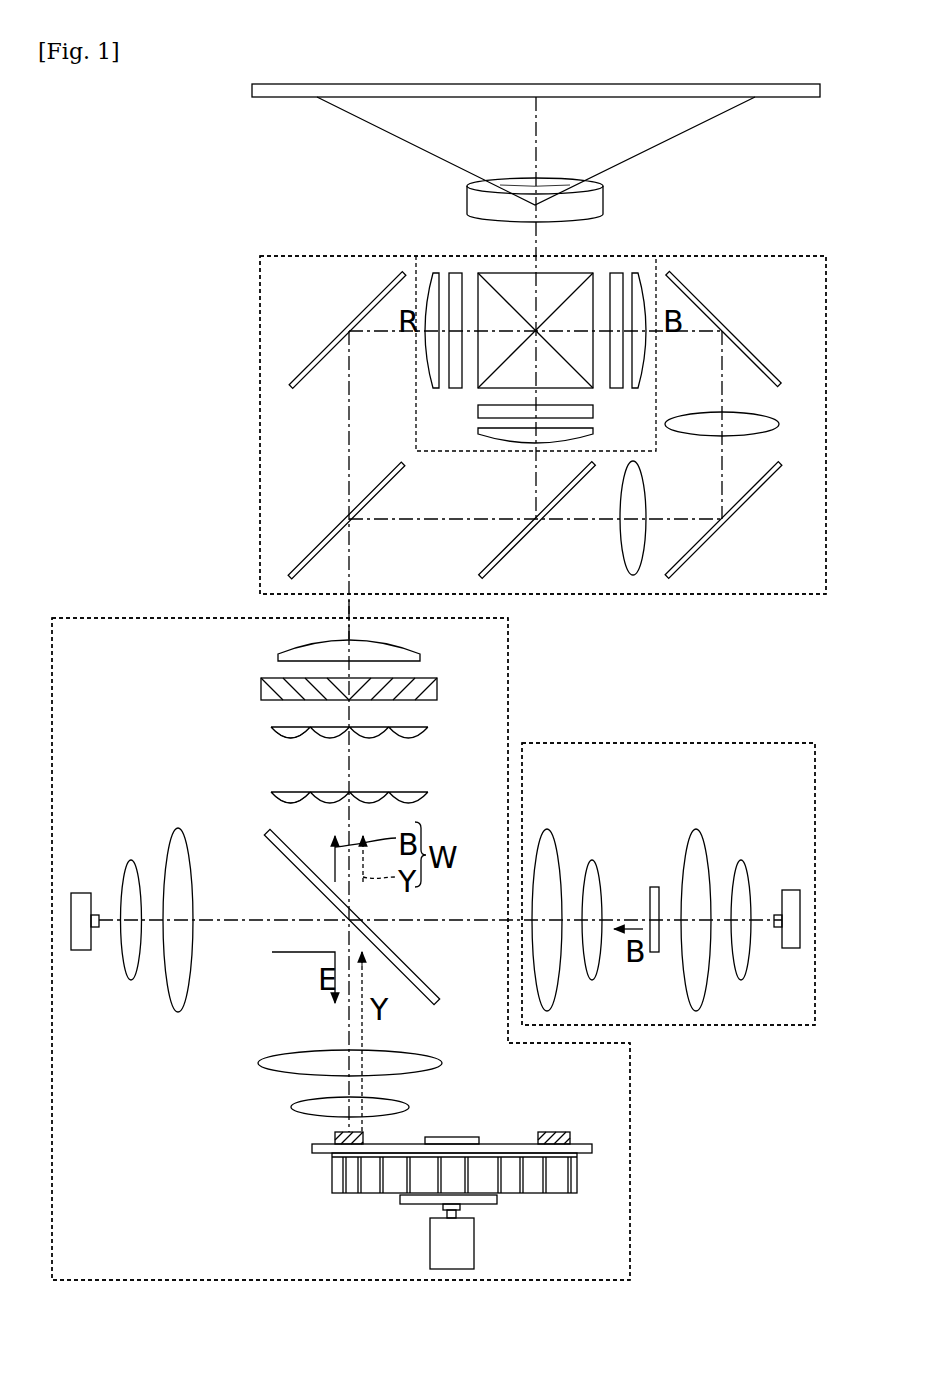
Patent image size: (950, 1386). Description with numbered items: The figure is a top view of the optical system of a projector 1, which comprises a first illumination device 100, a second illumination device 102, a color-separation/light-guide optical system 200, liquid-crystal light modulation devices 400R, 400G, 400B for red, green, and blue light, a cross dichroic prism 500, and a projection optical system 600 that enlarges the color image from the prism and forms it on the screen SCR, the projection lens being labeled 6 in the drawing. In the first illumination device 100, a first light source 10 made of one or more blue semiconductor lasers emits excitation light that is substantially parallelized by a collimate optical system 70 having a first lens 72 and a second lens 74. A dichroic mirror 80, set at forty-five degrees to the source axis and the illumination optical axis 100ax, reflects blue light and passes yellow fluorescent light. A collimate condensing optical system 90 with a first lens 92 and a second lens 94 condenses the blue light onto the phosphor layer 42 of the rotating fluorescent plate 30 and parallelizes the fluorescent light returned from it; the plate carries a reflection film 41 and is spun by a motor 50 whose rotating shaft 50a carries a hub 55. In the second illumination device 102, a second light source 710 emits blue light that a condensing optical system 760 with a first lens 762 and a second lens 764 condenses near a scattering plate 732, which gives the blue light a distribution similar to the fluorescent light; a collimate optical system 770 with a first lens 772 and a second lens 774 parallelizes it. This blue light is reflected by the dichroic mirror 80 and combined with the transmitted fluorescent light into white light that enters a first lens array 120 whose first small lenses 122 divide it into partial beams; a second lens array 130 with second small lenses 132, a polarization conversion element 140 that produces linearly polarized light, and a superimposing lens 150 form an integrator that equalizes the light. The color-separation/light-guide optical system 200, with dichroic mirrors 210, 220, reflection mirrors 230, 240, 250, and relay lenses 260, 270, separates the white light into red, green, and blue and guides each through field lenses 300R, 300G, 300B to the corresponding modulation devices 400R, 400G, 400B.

The projector 1 is at (216, 178).
The screen SCR is at (790, 98).
The projection optical system 6 is at (520, 186).
The projection optical system 600 is at (467, 203).
The cross dichroic prism 500 is at (585, 272).
The liquid-crystal light modulation device 400R is at (450, 272).
The liquid-crystal light modulation device 400G is at (478, 411).
The liquid-crystal light modulation device 400B is at (615, 272).
The field lens 300R is at (432, 272).
The field lens 300G is at (478, 435).
The field lens 300B is at (637, 272).
The color-separation/light-guide optical system 200 is at (770, 594).
The dichroic mirror 210 is at (317, 545).
The dichroic mirror 220 is at (525, 548).
The reflection mirror 230 is at (295, 378).
The reflection mirror 240 is at (745, 505).
The reflection mirror 250 is at (779, 375).
The relay lens 260 is at (620, 537).
The relay lens 270 is at (745, 412).
The first illumination device 100 is at (630, 1202).
The illumination optical axis 100ax is at (349, 607).
The second illumination device 102 is at (772, 1025).
The first light source 10 is at (102, 888).
The collimate optical system 70 is at (155, 870).
The first lens 72 is at (140, 861).
The second lens 74 is at (188, 830).
The dichroic mirror 80 is at (425, 980).
The collimate condensing optical system 90 is at (301, 1096).
The first lens 92 is at (300, 1113).
The second lens 94 is at (265, 1070).
The rotating fluorescent plate 30 is at (497, 1139).
The reflection film 41 is at (585, 1145).
The phosphor layer 42 is at (566, 1132).
The hub 55 is at (466, 1136).
The motor 50 is at (474, 1258).
The rotating shaft 50a is at (460, 1212).
The first lens array 120 is at (428, 797).
The first small lens 122 is at (275, 803).
The second lens array 130 is at (428, 732).
The second small lens 132 is at (275, 738).
The polarization conversion element 140 is at (437, 683).
The superimposing lens 150 is at (410, 645).
The second light source 710 is at (768, 893).
The condensing optical system 760 is at (730, 882).
The first lens 762 is at (748, 861).
The second lens 764 is at (700, 840).
The scattering plate 732 is at (655, 887).
The collimate optical system 770 is at (582, 882).
The first lens 772 is at (598, 862).
The second lens 774 is at (553, 840).